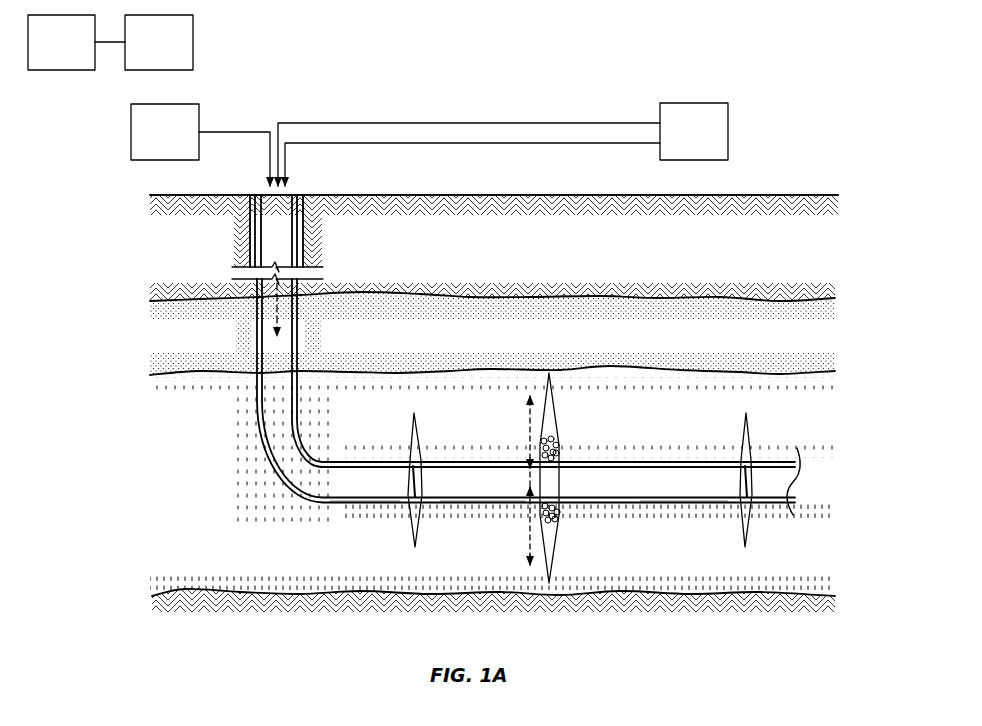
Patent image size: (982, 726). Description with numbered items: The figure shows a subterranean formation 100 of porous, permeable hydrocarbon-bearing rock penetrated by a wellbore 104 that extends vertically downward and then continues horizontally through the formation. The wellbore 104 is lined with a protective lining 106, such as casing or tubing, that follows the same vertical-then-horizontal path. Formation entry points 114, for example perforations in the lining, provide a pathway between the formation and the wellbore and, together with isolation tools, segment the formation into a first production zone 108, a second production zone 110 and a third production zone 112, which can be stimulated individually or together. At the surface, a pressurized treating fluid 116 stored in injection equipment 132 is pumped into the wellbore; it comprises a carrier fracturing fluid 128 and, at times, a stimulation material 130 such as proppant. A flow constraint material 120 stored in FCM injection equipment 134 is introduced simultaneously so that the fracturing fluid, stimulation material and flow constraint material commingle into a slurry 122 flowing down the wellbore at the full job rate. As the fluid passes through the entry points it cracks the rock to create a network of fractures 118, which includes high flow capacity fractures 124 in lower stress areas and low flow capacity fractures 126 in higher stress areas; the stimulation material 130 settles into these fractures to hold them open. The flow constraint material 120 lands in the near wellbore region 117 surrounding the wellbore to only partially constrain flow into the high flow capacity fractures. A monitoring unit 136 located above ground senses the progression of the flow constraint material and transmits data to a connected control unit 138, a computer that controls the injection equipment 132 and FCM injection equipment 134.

The subterranean formation 100 is at (792, 90).
The wellbore 104 is at (278, 372).
The protective lining 106 is at (306, 252).
The first production zone 108 is at (400, 506).
The second production zone 110 is at (526, 505).
The third production zone 112 is at (728, 506).
The formation entry points 114 is at (412, 468).
The treating fluid 116 is at (469, 288).
The near wellbore region 117 is at (527, 415).
The network of fractures 118 is at (812, 448).
The flow constraint material 120 is at (231, 130).
The slurry 122 is at (283, 304).
The high flow capacity fractures 124 is at (556, 410).
The low flow capacity fractures 126 is at (418, 426).
The fracturing fluid 128 is at (402, 122).
The stimulation material 130 is at (470, 142).
The injection equipment 132 is at (716, 143).
The FCM injection equipment 134 is at (187, 143).
The monitoring unit 136 is at (181, 54).
The control unit 138 is at (84, 54).